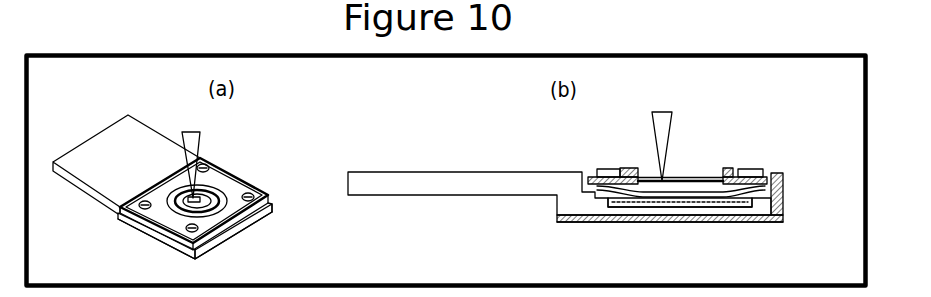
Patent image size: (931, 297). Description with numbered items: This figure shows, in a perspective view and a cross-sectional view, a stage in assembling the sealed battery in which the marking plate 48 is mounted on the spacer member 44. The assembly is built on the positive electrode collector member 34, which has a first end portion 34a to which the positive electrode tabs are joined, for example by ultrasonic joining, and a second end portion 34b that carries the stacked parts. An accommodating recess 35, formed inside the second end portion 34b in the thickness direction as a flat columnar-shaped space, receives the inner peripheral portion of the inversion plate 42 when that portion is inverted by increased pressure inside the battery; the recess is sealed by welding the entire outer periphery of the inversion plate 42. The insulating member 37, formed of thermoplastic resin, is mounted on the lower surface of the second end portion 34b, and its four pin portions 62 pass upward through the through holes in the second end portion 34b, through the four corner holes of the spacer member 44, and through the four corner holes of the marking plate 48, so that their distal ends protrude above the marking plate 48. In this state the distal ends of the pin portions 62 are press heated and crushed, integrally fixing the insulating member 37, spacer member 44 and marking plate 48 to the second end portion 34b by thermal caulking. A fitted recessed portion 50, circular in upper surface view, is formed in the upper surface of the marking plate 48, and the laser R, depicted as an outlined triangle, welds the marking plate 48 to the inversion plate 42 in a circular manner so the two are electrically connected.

The positive electrode collector member 34 is at (157, 126).
The first end portion 34a is at (86, 187).
The second end portion 34b is at (142, 229).
The laser R is at (201, 145).
The marking plate 48 is at (231, 185).
The pin portions 62 is at (270, 191).
The spacer member 44 is at (262, 216).
The insulating member 37 is at (228, 238).
The fitted recessed portion 50 is at (684, 178).
The inversion plate 42 is at (660, 198).
The accommodating recess 35 is at (703, 203).